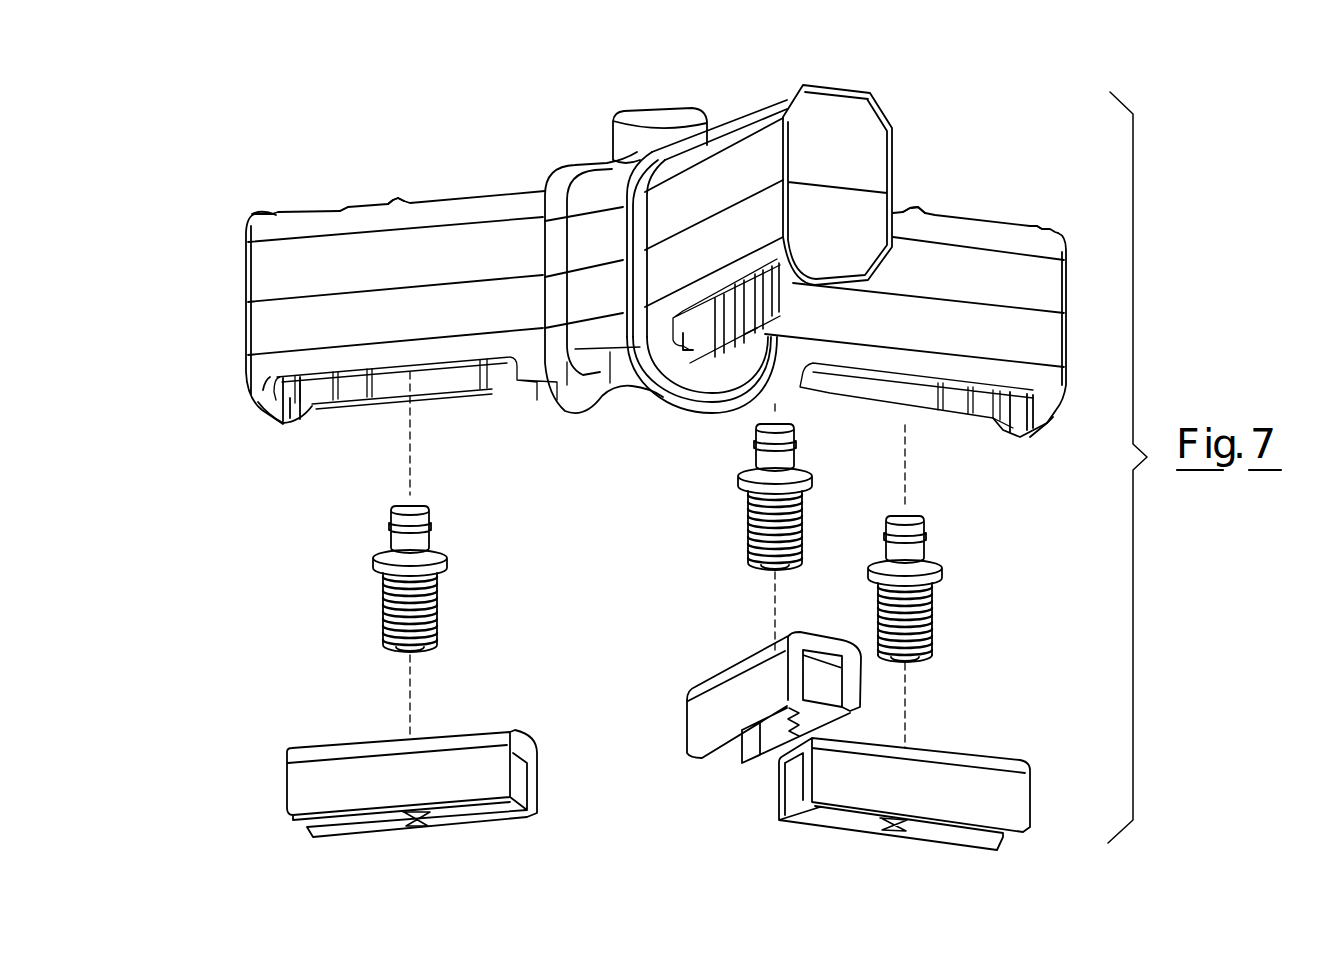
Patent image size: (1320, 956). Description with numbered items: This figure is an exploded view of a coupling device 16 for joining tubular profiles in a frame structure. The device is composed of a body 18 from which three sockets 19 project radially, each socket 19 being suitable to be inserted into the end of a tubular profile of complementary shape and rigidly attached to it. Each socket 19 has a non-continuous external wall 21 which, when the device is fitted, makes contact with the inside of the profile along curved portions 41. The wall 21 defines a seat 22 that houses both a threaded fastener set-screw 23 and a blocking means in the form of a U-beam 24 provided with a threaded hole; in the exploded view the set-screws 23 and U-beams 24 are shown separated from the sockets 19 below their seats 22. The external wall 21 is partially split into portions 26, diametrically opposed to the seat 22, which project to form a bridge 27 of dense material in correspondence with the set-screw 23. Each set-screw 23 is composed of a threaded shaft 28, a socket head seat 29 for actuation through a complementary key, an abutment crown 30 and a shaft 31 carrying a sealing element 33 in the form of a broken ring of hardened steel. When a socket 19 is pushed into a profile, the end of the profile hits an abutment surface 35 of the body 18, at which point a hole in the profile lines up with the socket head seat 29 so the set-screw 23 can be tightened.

The coupling device 16 is at (278, 145).
The body 18 is at (657, 117).
The socket 19 is at (242, 220).
The external wall 21 is at (257, 282).
The seat 22 is at (277, 423).
The threaded fastener set-screw 23 is at (658, 559).
The U-beam 24 is at (488, 752).
The portions 26 is at (352, 208).
The bridge 27 is at (397, 197).
The threaded shaft 28 is at (882, 619).
The socket head seat 29 is at (921, 674).
The abutment crown 30 is at (929, 567).
The shaft 31 is at (885, 530).
The sealing element 33 is at (928, 530).
The abutment surface 35 is at (645, 148).
The curved portions 41 is at (310, 223).